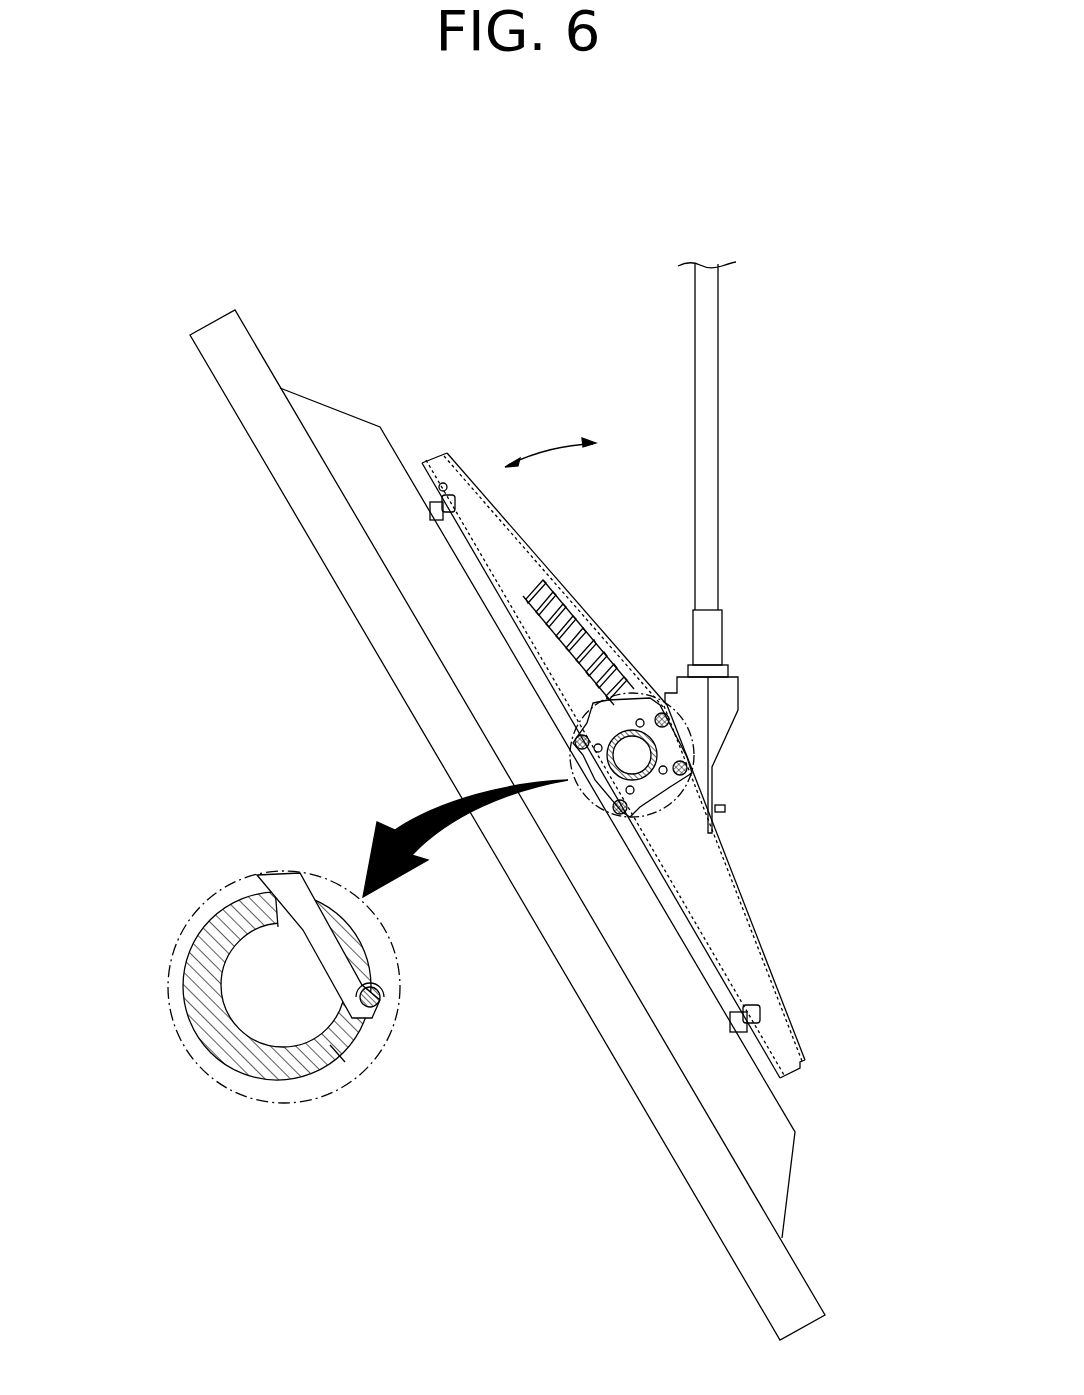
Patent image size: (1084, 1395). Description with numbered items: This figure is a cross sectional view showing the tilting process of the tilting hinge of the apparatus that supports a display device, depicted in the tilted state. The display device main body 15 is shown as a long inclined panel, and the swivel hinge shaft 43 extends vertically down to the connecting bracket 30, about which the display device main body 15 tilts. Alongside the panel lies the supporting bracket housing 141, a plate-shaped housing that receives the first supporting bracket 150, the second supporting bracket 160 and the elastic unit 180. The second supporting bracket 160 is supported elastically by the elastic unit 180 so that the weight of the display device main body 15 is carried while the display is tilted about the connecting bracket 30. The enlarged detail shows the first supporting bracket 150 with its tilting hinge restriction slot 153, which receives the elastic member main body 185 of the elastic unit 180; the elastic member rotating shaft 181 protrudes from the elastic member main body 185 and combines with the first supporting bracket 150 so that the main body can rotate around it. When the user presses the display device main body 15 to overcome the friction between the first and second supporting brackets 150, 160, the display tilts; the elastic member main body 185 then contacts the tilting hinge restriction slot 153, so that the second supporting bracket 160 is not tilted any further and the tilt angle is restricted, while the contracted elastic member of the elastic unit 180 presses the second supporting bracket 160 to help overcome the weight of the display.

The display device main body 15 is at (300, 498).
The swivel hinge shaft 43 is at (718, 571).
The elastic unit 180 is at (603, 647).
The connecting bracket 30 is at (739, 706).
The second supporting bracket 160 is at (690, 738).
The supporting bracket housing 141 is at (739, 884).
The elastic member main body 185 is at (352, 953).
The elastic member rotating shaft 181 is at (382, 996).
The first supporting bracket 150 is at (273, 1075).
The tilting hinge restriction slot 153 is at (367, 1035).